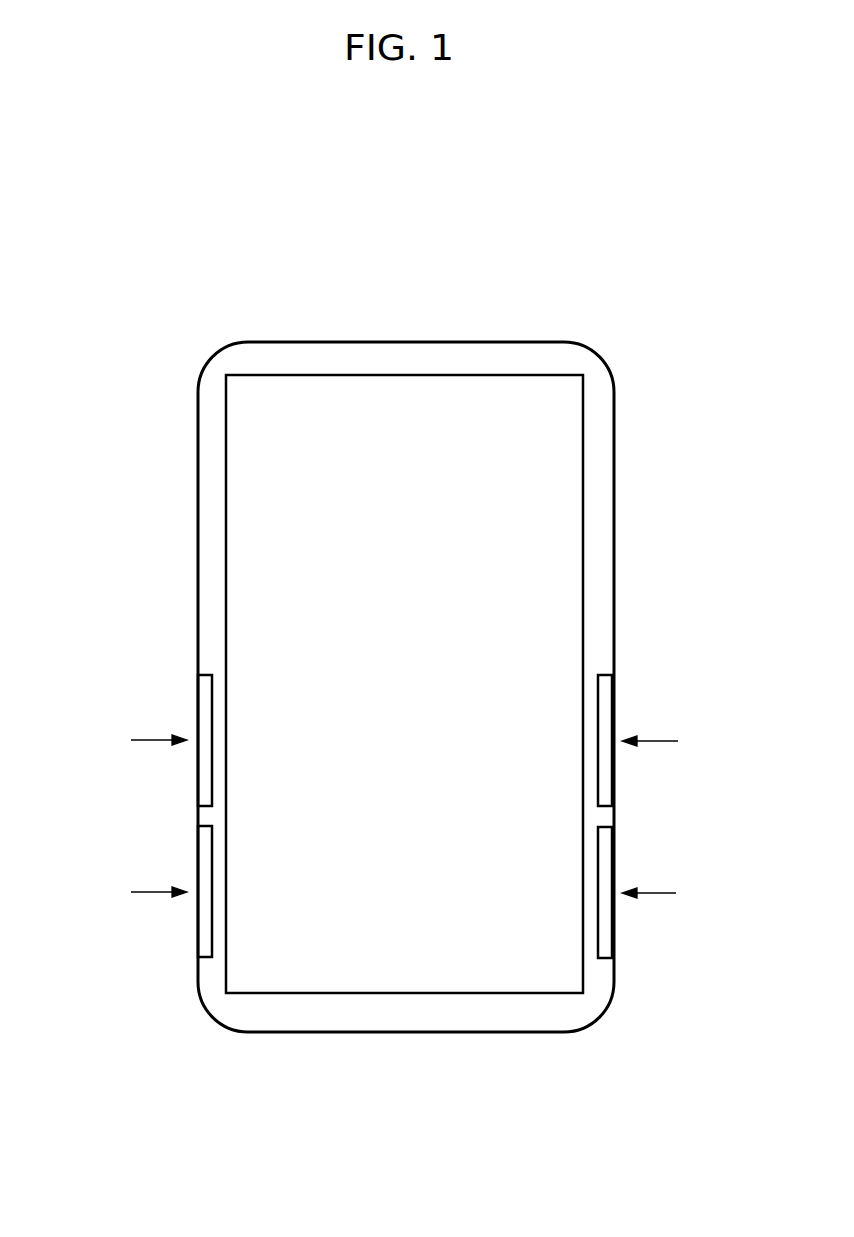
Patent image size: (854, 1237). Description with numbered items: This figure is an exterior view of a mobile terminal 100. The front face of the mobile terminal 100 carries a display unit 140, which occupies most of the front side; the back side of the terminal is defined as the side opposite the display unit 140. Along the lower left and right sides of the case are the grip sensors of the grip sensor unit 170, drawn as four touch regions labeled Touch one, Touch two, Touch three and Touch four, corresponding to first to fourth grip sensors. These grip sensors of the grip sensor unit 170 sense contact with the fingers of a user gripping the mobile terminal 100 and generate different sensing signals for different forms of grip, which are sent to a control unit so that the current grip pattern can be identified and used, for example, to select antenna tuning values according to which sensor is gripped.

The mobile terminal 100 is at (405, 644).
The display unit 140 is at (555, 483).
The grip sensor unit 170 is at (622, 715).